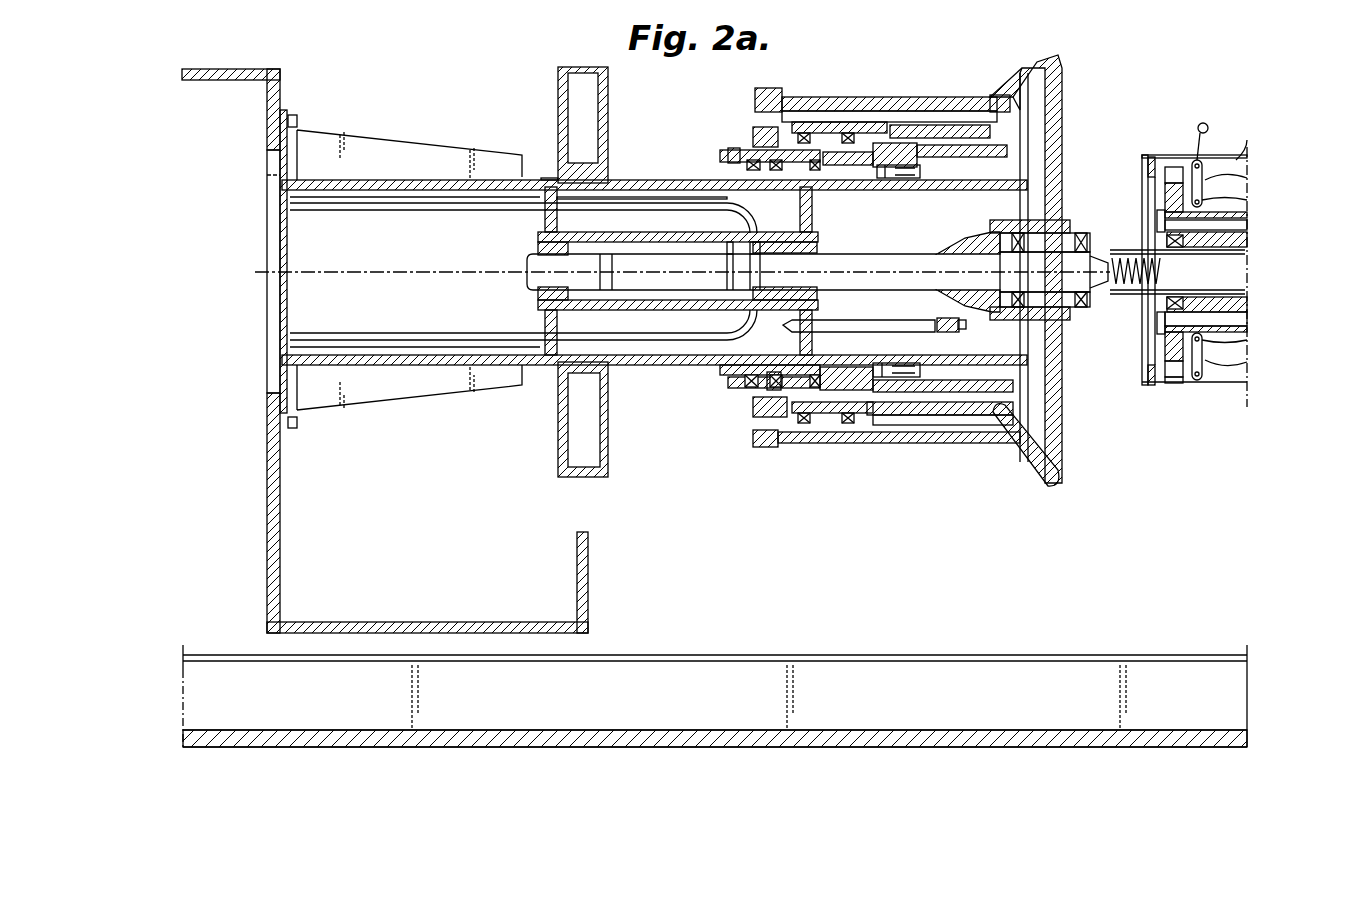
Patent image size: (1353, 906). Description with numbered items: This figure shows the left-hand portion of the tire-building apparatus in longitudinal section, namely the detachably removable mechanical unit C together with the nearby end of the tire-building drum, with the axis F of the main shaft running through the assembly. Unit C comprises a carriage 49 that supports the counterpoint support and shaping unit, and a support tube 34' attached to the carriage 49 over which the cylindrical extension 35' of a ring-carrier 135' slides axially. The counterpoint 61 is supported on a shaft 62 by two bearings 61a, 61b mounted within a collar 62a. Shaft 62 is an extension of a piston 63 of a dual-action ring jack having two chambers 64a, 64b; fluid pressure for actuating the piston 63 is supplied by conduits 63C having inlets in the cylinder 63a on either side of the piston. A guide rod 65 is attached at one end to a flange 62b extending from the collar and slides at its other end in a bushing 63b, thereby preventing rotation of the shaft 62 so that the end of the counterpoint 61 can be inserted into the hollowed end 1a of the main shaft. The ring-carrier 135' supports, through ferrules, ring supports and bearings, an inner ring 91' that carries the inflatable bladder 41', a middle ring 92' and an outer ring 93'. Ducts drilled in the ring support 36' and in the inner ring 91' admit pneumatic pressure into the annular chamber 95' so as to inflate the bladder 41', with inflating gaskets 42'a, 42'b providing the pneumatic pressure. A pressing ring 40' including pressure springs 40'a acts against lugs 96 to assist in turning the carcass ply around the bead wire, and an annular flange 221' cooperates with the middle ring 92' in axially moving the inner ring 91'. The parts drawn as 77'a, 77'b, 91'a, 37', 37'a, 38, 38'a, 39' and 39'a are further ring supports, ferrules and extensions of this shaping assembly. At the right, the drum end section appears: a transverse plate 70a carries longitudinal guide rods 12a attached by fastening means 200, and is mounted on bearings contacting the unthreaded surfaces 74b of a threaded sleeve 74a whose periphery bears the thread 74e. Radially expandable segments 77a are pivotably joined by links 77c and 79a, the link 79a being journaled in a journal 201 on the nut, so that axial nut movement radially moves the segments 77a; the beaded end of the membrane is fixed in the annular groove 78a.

The mechanical unit C is at (299, 104).
The axis of rotation F is at (333, 271).
The carriage 49 is at (590, 554).
The ring-carrier 135' is at (578, 255).
The support tube 34' is at (534, 142).
The cylindrical extension 35' is at (654, 247).
The conduits 63C is at (407, 212).
The cylinder 63a is at (762, 232).
The bushing 63b is at (815, 215).
The chamber 64a is at (628, 303).
The chamber 64b is at (755, 300).
The piston 63 is at (727, 300).
The shaft 62 is at (927, 252).
The collar 62a is at (968, 320).
The flange 62b is at (937, 312).
The guide rod 65 is at (865, 325).
The counterpoint 61 is at (1072, 322).
The bearing 61a is at (1018, 233).
The bearing 61b is at (1083, 232).
The housing ring 77'a is at (882, 102).
The housing ring 77'b is at (839, 102).
The annular flange 221' is at (833, 92).
The sleeve 91'a is at (940, 100).
The annular chamber 95' is at (760, 141).
The inflatable bladder 41' is at (892, 108).
The pressing ring 40' is at (940, 117).
The pressure springs 40'a is at (896, 195).
The ring support 36' is at (845, 425).
The bearing housing 37' is at (776, 405).
The bearing ring 37'a is at (813, 441).
The sleeve 38 is at (925, 433).
The sleeve 38'a is at (943, 450).
The outer sleeve 39' is at (899, 459).
The flange 39'a is at (758, 458).
The inflating gasket 42'a is at (860, 353).
The inflating gasket 42'b is at (775, 359).
The inner ring 91' is at (1042, 269).
The middle ring 92' is at (1059, 257).
The outer ring 93' is at (1026, 457).
The hollowed end 1a is at (1125, 290).
The thread 74e is at (1240, 273).
The threaded sleeve 74a is at (1165, 243).
The unthreaded surfaces 74b is at (1165, 305).
The lugs 96 is at (1142, 170).
The fastening means 200 is at (1158, 215).
The radially expandable segments 77a is at (1174, 165).
The link 79a is at (1200, 178).
The journal 201 is at (1200, 375).
The link 77c is at (1240, 195).
The annular bead receiving groove 78a is at (1247, 147).
The longitudinal guide rods 12a is at (1240, 318).
The transverse plate 70a is at (1175, 383).